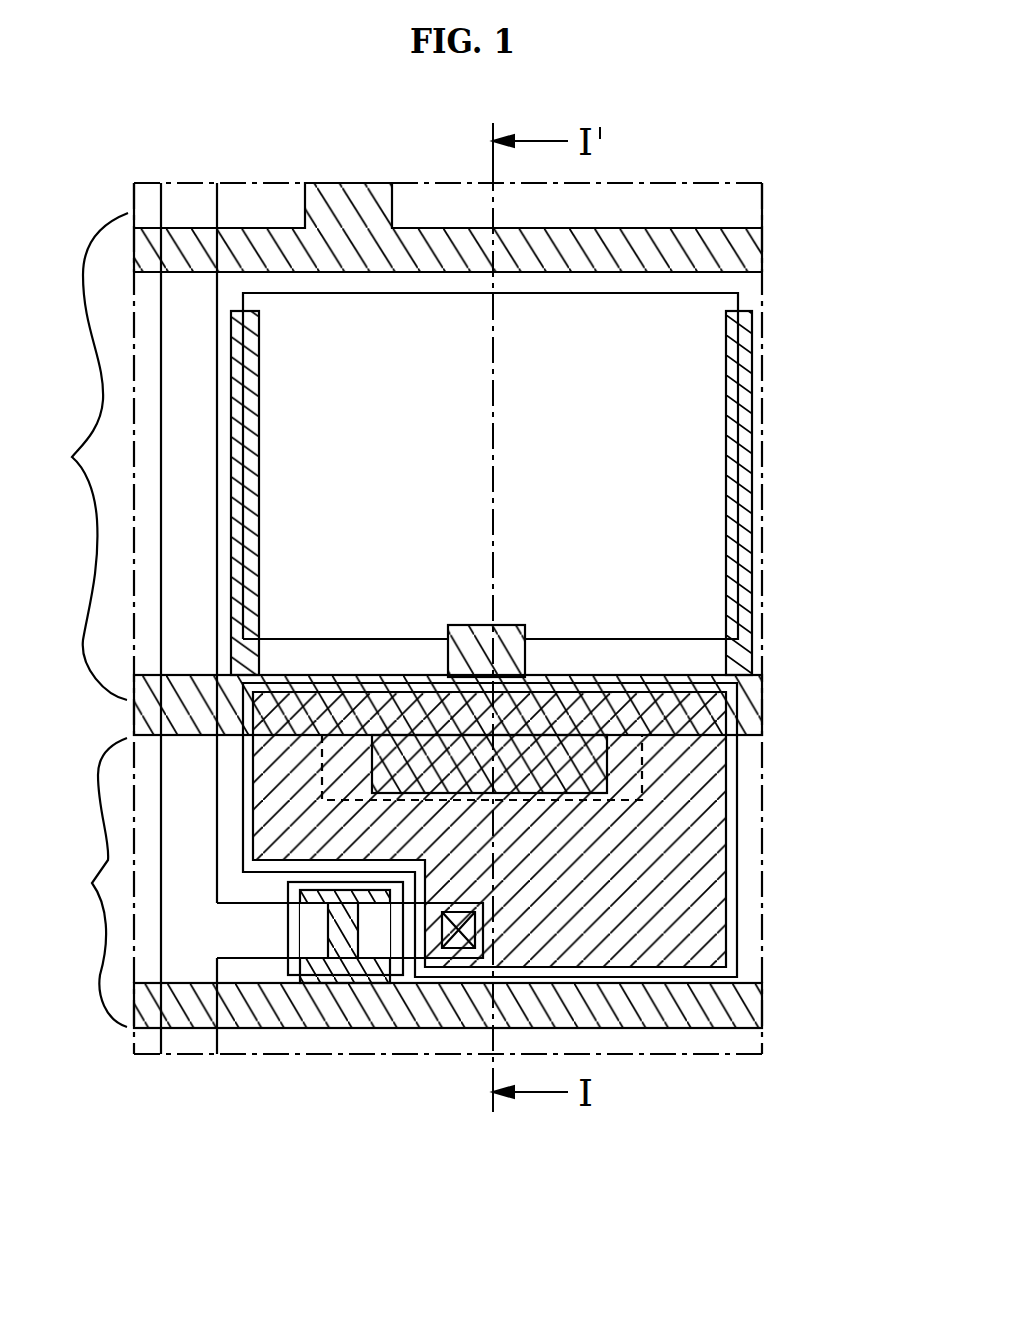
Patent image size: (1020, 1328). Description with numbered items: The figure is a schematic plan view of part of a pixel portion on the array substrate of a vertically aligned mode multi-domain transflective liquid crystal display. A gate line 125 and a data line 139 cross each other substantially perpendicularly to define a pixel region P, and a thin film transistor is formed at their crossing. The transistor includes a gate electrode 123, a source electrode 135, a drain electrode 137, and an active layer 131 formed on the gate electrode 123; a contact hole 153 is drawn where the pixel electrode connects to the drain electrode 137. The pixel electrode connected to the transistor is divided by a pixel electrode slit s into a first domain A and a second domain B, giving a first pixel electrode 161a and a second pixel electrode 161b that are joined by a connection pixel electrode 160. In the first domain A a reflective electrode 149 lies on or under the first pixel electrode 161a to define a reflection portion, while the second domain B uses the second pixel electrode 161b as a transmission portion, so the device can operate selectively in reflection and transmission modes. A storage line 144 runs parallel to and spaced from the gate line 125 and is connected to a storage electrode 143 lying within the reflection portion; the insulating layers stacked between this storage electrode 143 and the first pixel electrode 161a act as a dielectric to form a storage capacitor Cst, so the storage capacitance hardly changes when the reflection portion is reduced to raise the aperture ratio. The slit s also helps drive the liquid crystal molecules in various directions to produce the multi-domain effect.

The gate electrode 123 is at (330, 958).
The gate line 125 is at (708, 1018).
The active layer 131 is at (355, 975).
The source electrode 135 is at (248, 960).
The drain electrode 137 is at (412, 968).
The data line 139 is at (188, 198).
The storage electrode 143 is at (605, 770).
The storage line 144 is at (752, 717).
The reflective electrode 149 is at (727, 880).
The contact hole 153 is at (452, 946).
The connection pixel electrode 160 is at (512, 662).
The first pixel electrode 161a is at (738, 934).
The second pixel electrode 161b is at (750, 503).
The pixel region P is at (763, 358).
The storage capacitor Cst is at (642, 780).
The first domain A is at (97, 882).
The second domain B is at (90, 456).
The pixel electrode slit s is at (333, 658).